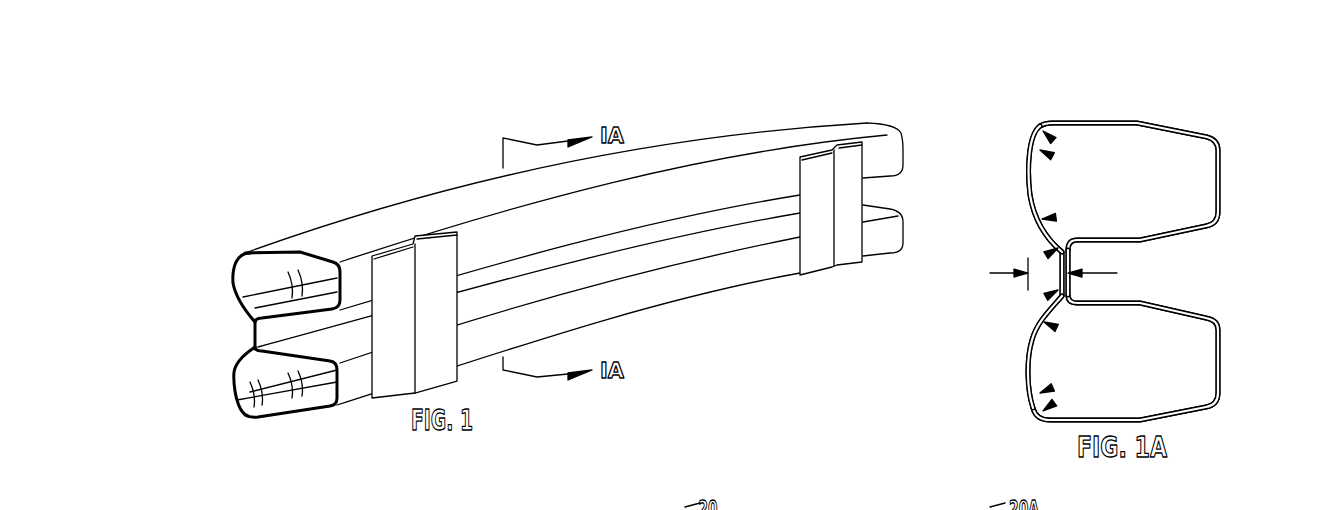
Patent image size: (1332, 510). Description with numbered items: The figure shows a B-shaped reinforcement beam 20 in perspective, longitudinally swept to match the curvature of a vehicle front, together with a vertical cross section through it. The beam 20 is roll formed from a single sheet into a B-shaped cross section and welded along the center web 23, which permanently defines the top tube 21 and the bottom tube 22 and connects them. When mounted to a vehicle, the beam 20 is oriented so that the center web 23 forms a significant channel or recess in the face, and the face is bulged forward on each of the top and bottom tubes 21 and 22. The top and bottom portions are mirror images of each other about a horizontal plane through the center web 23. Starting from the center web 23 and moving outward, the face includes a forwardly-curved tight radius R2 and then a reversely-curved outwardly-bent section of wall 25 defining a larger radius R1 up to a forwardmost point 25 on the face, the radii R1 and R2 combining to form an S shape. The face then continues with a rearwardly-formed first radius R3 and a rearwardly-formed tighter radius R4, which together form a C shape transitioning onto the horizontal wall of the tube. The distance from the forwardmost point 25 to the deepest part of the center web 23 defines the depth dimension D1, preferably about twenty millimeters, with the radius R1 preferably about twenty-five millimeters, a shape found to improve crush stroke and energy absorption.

In FIG. 1, the B-shaped reinforcement beam 20 is at (896, 108).
In FIG. 1A, the B-shaped reinforcement beam 20 is at (1256, 117).
In FIG. 1, the top tube 21 is at (281, 265).
In FIG. 1A, the top tube 21 is at (1143, 147).
In FIG. 1, the bottom tube 22 is at (285, 408).
In FIG. 1A, the bottom tube 22 is at (1147, 325).
In FIG. 1, the center web 23 is at (261, 331).
In FIG. 1A, the center web 23 is at (1073, 283).
In FIG. 1, the outwardly-bent section of wall / forwardmost point 25 is at (231, 277).
In FIG. 1A, the outwardly-bent section of wall / forwardmost point 25 is at (1030, 177).
In FIG. 1A, the radius R1 is at (1058, 217).
In FIG. 1A, the radius R2 is at (1043, 256).
In FIG. 1A, the radius R3 is at (1056, 160).
In FIG. 1A, the radius R4 is at (1060, 146).
In FIG. 1A, the depth dimension D1 is at (990, 272).